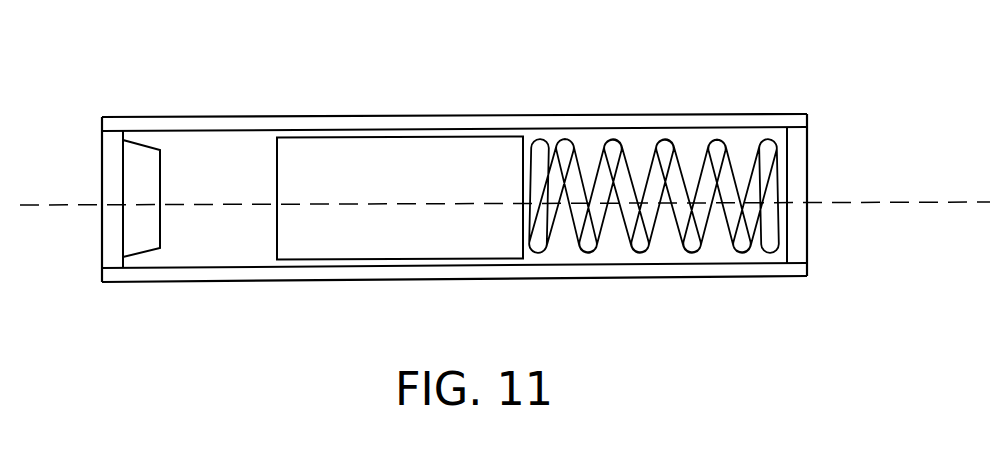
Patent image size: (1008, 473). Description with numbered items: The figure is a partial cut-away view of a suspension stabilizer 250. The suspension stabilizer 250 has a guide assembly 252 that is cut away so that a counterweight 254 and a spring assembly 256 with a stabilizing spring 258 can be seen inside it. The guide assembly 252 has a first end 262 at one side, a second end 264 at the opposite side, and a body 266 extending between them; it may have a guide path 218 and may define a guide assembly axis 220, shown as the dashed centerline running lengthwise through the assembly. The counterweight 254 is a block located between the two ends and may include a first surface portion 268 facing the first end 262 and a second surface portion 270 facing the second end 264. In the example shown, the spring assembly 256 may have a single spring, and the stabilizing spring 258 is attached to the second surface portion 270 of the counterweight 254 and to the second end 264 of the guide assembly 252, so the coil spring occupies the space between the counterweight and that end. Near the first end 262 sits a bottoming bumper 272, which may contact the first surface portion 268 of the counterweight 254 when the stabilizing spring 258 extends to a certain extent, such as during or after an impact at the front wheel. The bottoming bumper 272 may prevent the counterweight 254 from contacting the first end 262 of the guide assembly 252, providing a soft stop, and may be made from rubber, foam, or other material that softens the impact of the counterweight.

The guide path 218 is at (172, 132).
The guide assembly axis 220 is at (505, 180).
The suspension stabilizer 250 is at (595, 49).
The guide assembly 252 is at (717, 106).
The counterweight 254 is at (383, 155).
The spring assembly 256 is at (641, 297).
The stabilizing spring 258 is at (643, 150).
The first end 262 is at (103, 264).
The second end 264 is at (806, 260).
The body 266 is at (768, 278).
The first surface portion 268 is at (274, 140).
The second surface portion 270 is at (523, 139).
The bottoming bumper 272 is at (144, 243).